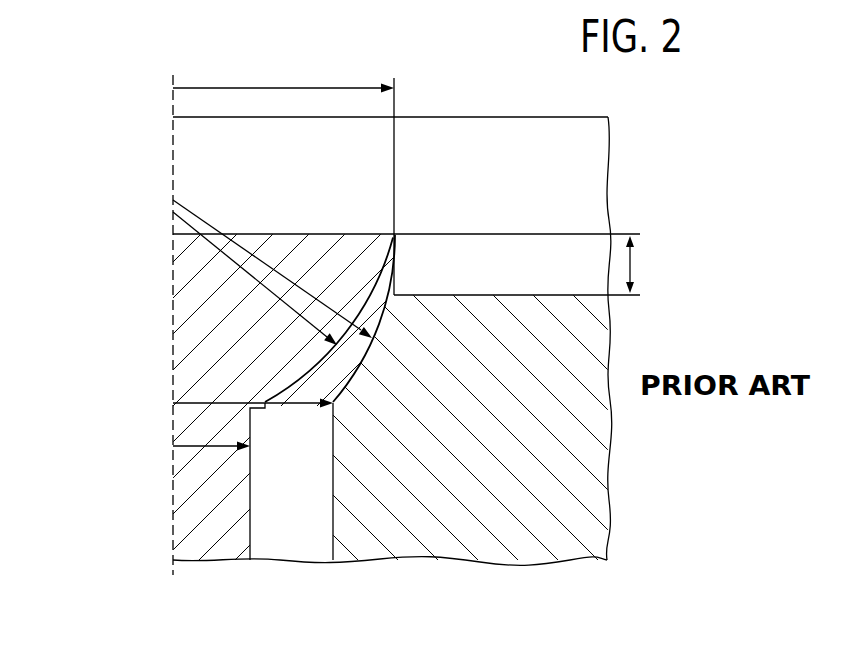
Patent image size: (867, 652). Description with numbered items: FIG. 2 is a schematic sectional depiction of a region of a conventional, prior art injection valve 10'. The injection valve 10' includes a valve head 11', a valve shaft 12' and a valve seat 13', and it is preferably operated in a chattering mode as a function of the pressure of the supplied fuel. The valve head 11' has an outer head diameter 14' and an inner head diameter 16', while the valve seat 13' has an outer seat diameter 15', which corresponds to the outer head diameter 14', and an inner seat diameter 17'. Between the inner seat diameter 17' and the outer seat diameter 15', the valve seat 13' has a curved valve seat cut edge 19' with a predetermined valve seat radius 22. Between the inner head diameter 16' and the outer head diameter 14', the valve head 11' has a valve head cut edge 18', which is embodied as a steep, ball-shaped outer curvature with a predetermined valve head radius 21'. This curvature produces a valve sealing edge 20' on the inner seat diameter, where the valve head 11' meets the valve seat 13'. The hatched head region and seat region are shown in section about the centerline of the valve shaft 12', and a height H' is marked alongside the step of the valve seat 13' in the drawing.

The injection valve 10' is at (322, 315).
The valve head 11' is at (244, 356).
The valve shaft 12' is at (390, 517).
The valve seat 13' is at (470, 466).
The outer head diameter 14' is at (283, 73).
The outer seat diameter 15' is at (283, 73).
The inner head diameter 16' is at (186, 498).
The inner seat diameter 17' is at (225, 439).
The valve head cut edge 18' is at (312, 320).
The valve seat cut edge 19' is at (402, 318).
The valve sealing edge 20' is at (380, 481).
The valve head radius 21' is at (227, 278).
The valve seat radius 22 is at (195, 214).
The height dimension H' is at (415, 264).